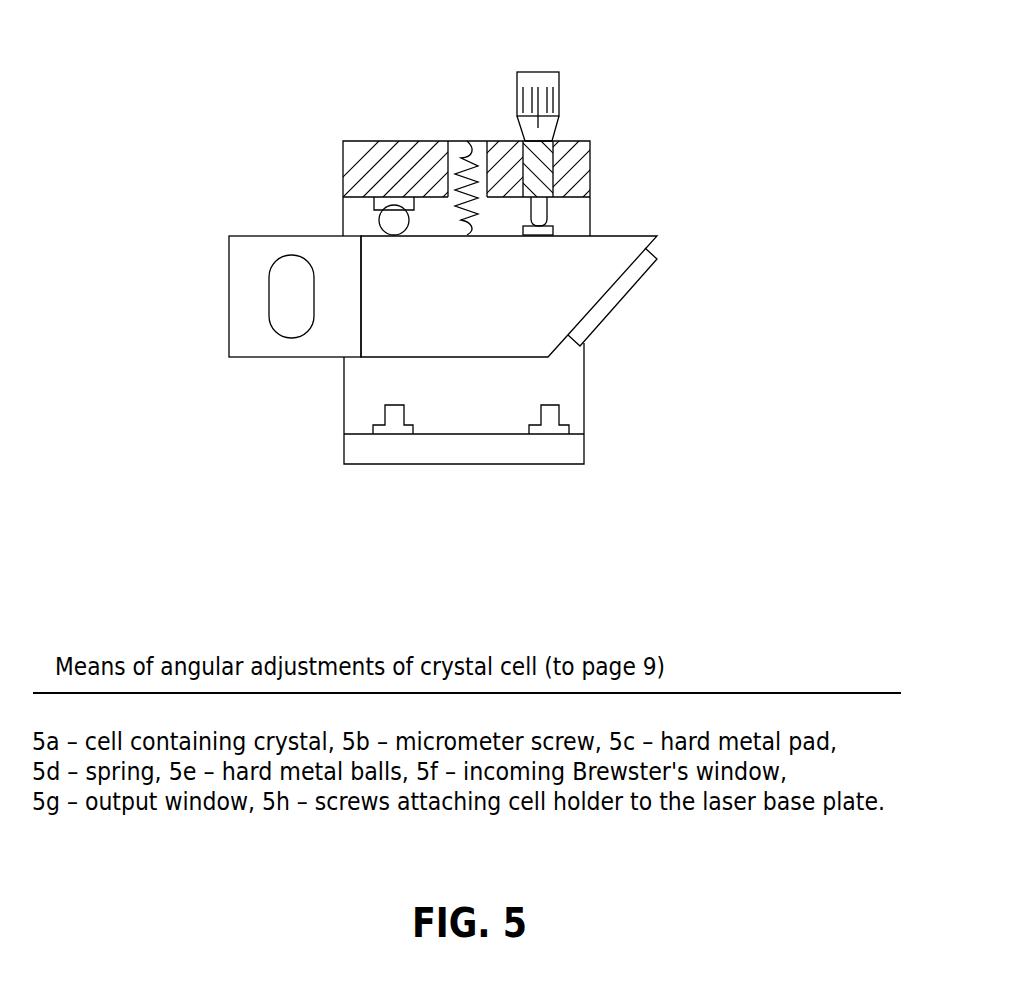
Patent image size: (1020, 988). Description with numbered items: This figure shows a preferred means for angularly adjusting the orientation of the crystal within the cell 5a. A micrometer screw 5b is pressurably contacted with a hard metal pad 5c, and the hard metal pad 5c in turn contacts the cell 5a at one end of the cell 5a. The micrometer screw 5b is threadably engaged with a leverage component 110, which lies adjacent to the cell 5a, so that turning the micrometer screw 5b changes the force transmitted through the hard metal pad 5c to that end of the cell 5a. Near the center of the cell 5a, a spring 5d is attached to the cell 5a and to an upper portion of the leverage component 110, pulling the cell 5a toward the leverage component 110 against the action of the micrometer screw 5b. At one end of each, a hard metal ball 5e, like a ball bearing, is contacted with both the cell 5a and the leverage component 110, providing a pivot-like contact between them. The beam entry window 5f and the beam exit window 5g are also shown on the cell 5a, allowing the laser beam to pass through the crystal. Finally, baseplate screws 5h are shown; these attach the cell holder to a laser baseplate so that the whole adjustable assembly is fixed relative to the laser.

The leverage component 110 is at (343, 153).
The cell 5a is at (615, 252).
The micrometer screw 5b is at (542, 72).
The hard metal pad 5c is at (555, 226).
The spring 5d is at (467, 141).
The hard metal ball 5e is at (387, 220).
The beam entry window 5f is at (280, 323).
The beam exit window 5g is at (618, 303).
The baseplate screws 5h is at (548, 420).